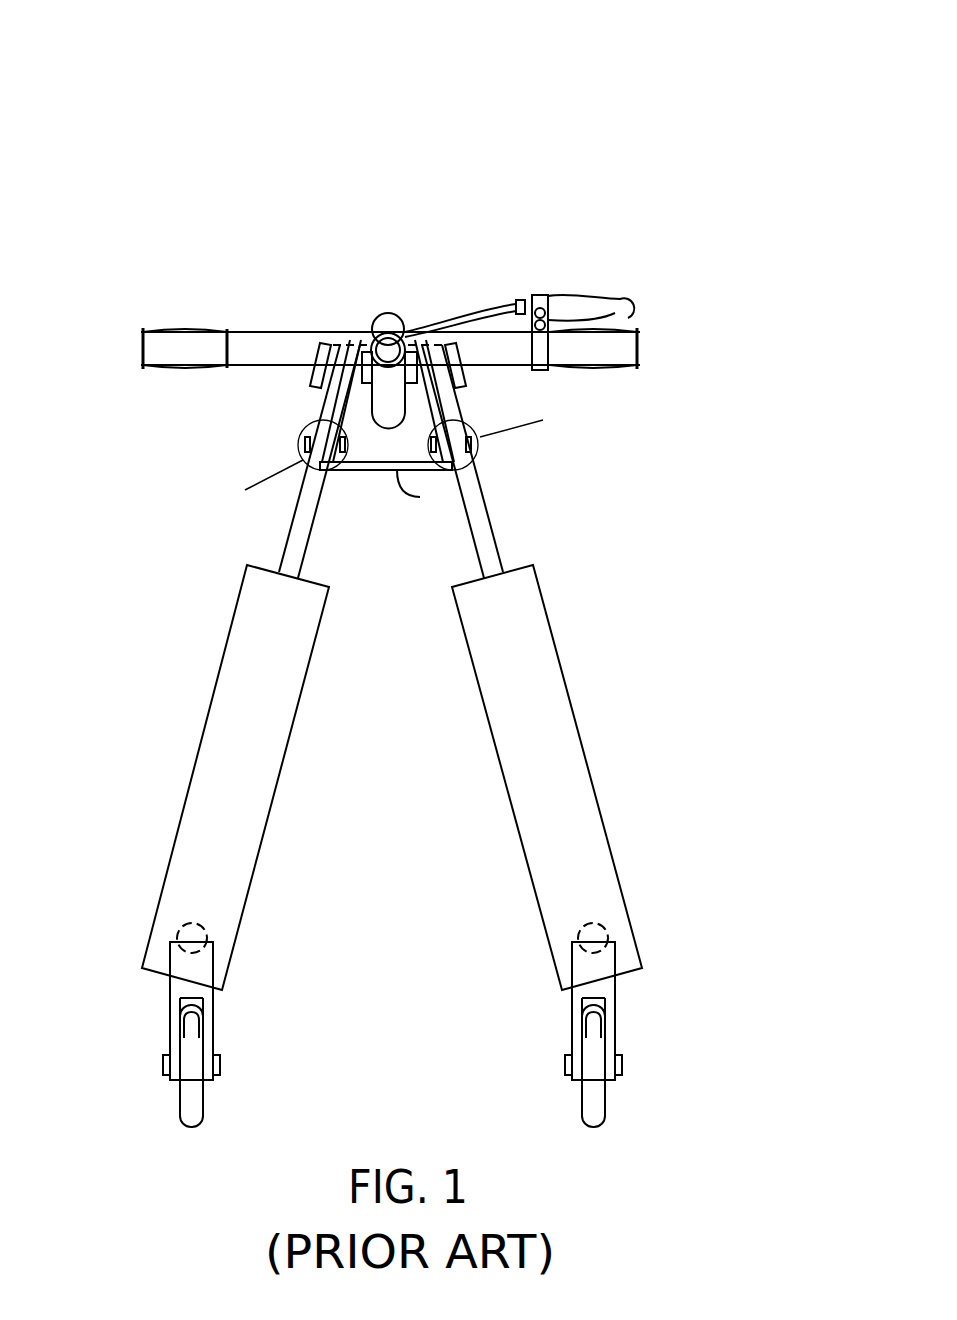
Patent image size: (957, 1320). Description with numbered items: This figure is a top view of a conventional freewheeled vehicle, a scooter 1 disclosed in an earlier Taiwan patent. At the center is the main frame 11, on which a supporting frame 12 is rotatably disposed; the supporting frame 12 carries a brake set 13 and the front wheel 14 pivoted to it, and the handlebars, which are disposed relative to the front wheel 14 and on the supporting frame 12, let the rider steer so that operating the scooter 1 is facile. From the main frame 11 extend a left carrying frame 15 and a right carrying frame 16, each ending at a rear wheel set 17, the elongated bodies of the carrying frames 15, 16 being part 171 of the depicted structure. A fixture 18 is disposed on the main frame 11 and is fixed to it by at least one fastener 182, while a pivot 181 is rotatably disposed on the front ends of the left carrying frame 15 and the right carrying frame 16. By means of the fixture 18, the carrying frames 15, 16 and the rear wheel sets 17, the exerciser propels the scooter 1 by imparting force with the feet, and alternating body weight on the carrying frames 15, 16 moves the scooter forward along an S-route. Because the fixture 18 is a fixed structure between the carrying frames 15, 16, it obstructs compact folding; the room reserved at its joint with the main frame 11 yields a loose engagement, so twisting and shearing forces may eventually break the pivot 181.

The scooter 1 is at (154, 86).
The main frame 11 is at (390, 323).
The supporting frame 12 is at (372, 330).
The brake set 13 is at (560, 295).
The front wheel 14 is at (383, 322).
The left carrying frame 15 is at (281, 532).
The right carrying frame 16 is at (490, 527).
The rear wheel sets 17 is at (120, 940).
The fixture 18 is at (420, 497).
The wheel housing body 171 is at (590, 765).
The pivot 181 is at (305, 442).
The fastener 182 is at (312, 373).